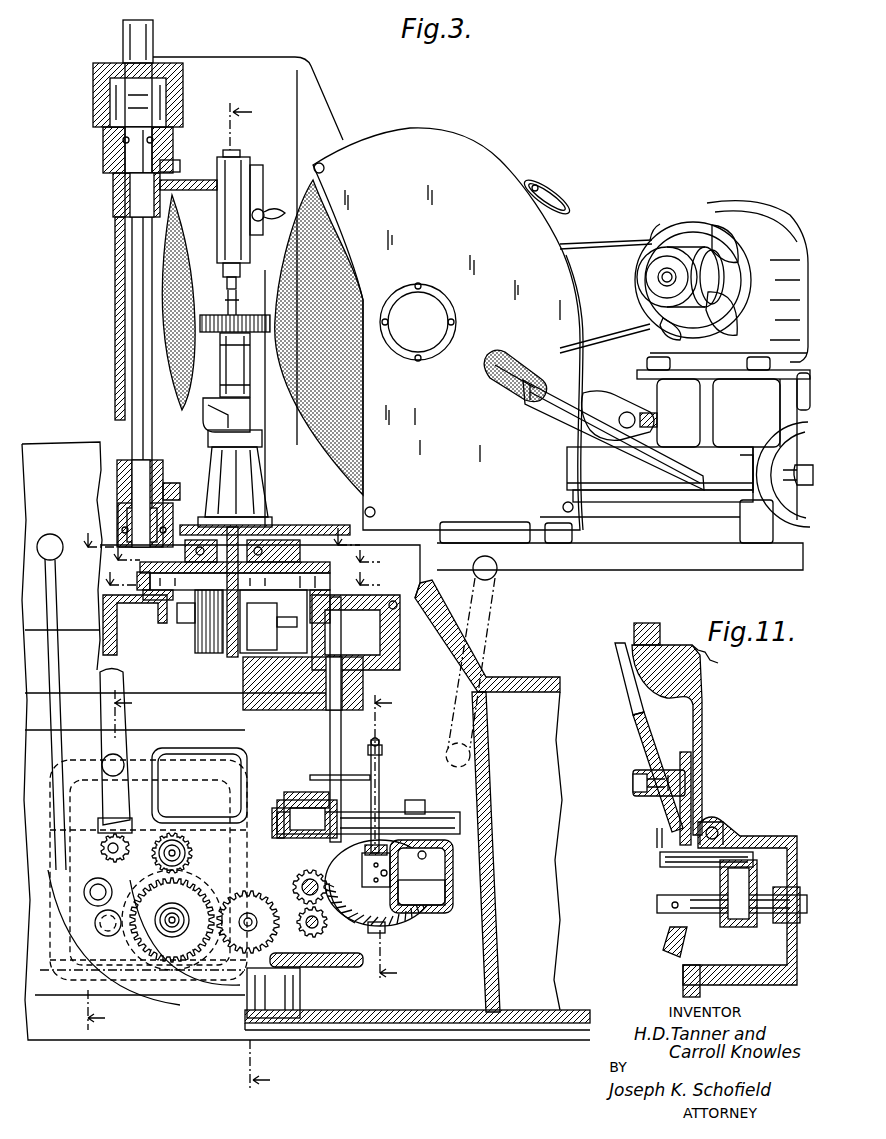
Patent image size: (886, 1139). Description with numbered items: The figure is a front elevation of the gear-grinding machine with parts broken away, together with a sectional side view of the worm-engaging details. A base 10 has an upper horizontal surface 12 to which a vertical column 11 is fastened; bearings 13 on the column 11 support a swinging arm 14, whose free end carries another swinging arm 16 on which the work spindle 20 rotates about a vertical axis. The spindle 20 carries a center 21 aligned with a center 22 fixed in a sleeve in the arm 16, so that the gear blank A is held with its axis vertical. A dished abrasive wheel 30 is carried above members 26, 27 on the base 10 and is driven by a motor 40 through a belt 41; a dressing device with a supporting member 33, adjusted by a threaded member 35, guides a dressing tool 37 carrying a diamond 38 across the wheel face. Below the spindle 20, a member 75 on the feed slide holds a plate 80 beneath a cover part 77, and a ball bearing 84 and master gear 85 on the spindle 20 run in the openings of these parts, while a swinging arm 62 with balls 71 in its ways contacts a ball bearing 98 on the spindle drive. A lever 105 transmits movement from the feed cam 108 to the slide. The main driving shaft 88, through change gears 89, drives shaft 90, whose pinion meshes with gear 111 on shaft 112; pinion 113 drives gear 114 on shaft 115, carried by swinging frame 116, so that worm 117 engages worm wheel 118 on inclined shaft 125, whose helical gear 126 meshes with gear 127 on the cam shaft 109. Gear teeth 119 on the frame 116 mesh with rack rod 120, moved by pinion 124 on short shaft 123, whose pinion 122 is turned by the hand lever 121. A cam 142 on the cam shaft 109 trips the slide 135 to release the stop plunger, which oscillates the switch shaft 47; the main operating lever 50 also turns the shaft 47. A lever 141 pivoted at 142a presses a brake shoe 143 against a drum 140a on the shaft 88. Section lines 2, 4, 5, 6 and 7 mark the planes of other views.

In FIG. 3, the column 11 is at (325, 105).
In FIG. 3, the bearings 13 is at (98, 125).
In FIG. 3, the arm 14 is at (113, 205).
In FIG. 3, the arm 16 is at (257, 198).
In FIG. 3, the center 22 is at (226, 282).
In FIG. 3, the section line 2- 2 is at (256, 597).
In FIG. 3, the gear blank A is at (258, 310).
In FIG. 3, the center 21 is at (240, 425).
In FIG. 3, the work spindle 20 is at (220, 525).
In FIG. 3, the wheel 30 is at (345, 450).
In FIG. 3, the section line 6- 6 is at (217, 529).
In FIG. 3, the section line 5- 5 is at (247, 552).
In FIG. 3, the section line 4- 4 is at (243, 574).
In FIG. 3, the master gear 85 is at (193, 540).
In FIG. 3, the ball bearing 84 is at (270, 540).
In FIG. 3, the plate 80 is at (292, 560).
In FIG. 3, the plate 77 is at (330, 545).
In FIG. 3, the member 75 is at (152, 598).
In FIG. 3, the upper horizontal surface 12 is at (422, 552).
In FIG. 3, the ball bearing 98 is at (194, 640).
In FIG. 3, the arm 62 is at (268, 612).
In FIG. 3, the balls 71 is at (398, 632).
In FIG. 3, the main operating lever 50 is at (500, 605).
In FIG. 3, the base 10 is at (121, 860).
In FIG. 11, the base 10 is at (698, 724).
In FIG. 3, the section line 7- 7 is at (393, 838).
In FIG. 3, the lever 141 is at (58, 655).
In FIG. 11, the lever 141 is at (655, 838).
In FIG. 3, the hand lever 121 is at (125, 690).
In FIG. 11, the hand lever 121 is at (626, 728).
In FIG. 3, the drum 140a is at (160, 800).
In FIG. 3, the lever 105 is at (328, 742).
In FIG. 3, the feed cam 108 is at (322, 775).
In FIG. 3, the gear 127 is at (362, 765).
In FIG. 3, the inclined shaft 125 is at (382, 750).
In FIG. 3, the swinging frame 116 is at (362, 880).
In FIG. 3, the worm wheel 118 is at (400, 912).
In FIG. 3, the worm 117 is at (378, 935).
In FIG. 3, the gear 114 is at (280, 830).
In FIG. 3, the gear teeth 119 is at (292, 792).
In FIG. 3, the rod 120 is at (275, 810).
In FIG. 11, the rod 120 is at (713, 822).
In FIG. 3, the cam shaft 109 is at (455, 825).
In FIG. 3, the cam 142 is at (414, 803).
In FIG. 3, the shaft 47 is at (428, 856).
In FIG. 3, the slide 135 is at (445, 888).
In FIG. 3, the helical gear 126 is at (388, 874).
In FIG. 3, the shaft 115 is at (295, 884).
In FIG. 3, the pinion 113 is at (322, 928).
In FIG. 3, the shaft 112 is at (325, 940).
In FIG. 3, the gear 111 is at (293, 970).
In FIG. 3, the main driving shaft 88 is at (186, 858).
In FIG. 3, the change gears 89 is at (167, 962).
In FIG. 3, the shaft 90 is at (245, 905).
In FIG. 3, the brake shoe 143 is at (110, 830).
In FIG. 11, the brake shoe 143 is at (752, 836).
In FIG. 3, the short shaft 123 is at (108, 848).
In FIG. 11, the short shaft 123 is at (660, 858).
In FIG. 3, the pinion 122 is at (84, 892).
In FIG. 11, the pinion 122 is at (663, 893).
In FIG. 3, the pivot 142a is at (95, 923).
In FIG. 11, the pivot 142a is at (770, 920).
In FIG. 3, the motor 40 is at (692, 222).
In FIG. 3, the belt 41 is at (622, 245).
In FIG. 3, the threaded member 35 is at (655, 420).
In FIG. 3, the supporting member 33 is at (620, 460).
In FIG. 3, the diamond 38 is at (512, 395).
In FIG. 3, the dressing tool 37 is at (672, 475).
In FIG. 3, the slide member 27 is at (723, 481).
In FIG. 3, the member 26 is at (676, 540).
In FIG. 11, the pinion 124 is at (718, 915).